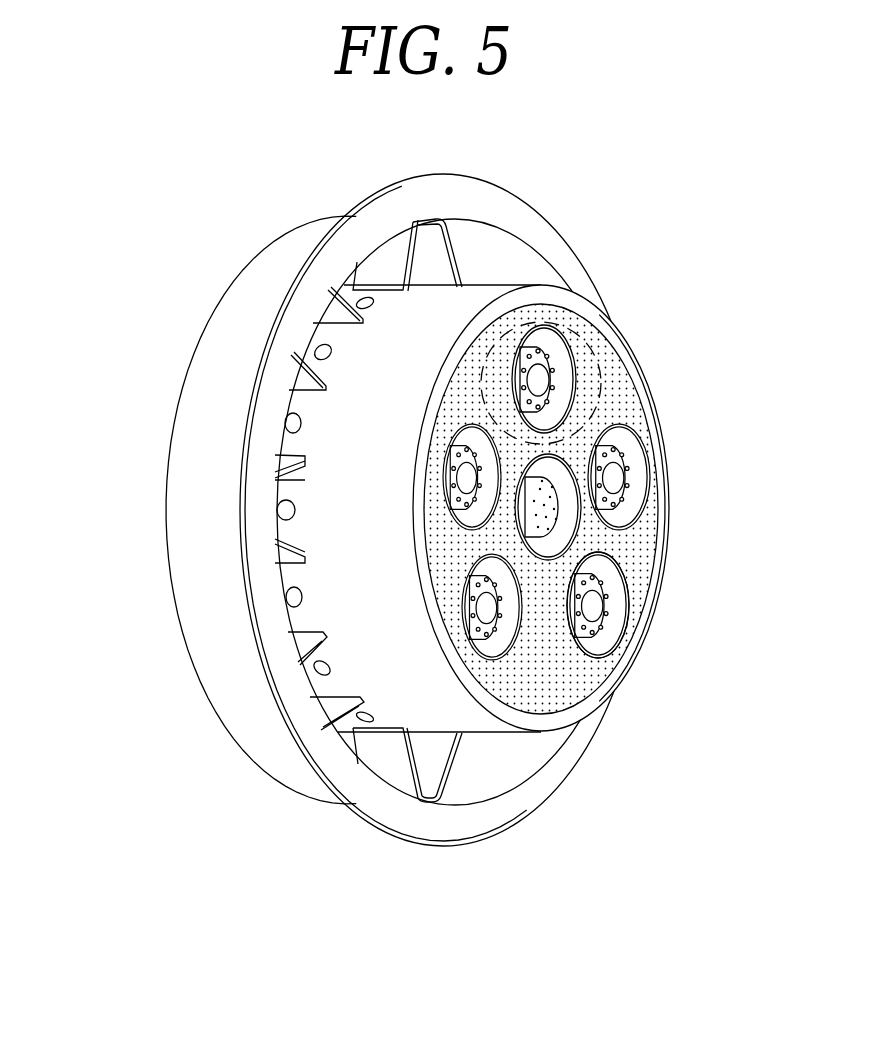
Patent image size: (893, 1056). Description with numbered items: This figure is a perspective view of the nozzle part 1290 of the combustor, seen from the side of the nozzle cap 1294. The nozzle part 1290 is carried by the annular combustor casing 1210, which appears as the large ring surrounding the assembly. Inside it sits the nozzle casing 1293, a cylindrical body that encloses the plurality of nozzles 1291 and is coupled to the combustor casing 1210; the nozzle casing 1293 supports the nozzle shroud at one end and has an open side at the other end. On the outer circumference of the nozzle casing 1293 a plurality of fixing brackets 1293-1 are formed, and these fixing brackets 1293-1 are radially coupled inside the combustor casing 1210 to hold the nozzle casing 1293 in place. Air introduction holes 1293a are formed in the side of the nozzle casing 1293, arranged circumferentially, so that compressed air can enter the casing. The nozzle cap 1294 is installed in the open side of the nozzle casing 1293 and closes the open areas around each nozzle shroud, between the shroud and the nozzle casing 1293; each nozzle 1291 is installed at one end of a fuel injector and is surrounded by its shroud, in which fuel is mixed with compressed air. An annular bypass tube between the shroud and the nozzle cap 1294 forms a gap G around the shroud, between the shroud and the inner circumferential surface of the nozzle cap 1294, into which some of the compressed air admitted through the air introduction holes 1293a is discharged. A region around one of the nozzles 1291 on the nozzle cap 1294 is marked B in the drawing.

The nozzle part 1290 is at (286, 166).
The combustor casing 1210 is at (232, 667).
The nozzle casing 1293 is at (432, 700).
The fixing brackets 1293-1 is at (293, 388).
The air introduction hole 1293a is at (292, 596).
The nozzle cap 1294 is at (613, 397).
The nozzle 1291 is at (586, 600).
The region B is at (582, 334).
The gap G is at (610, 652).